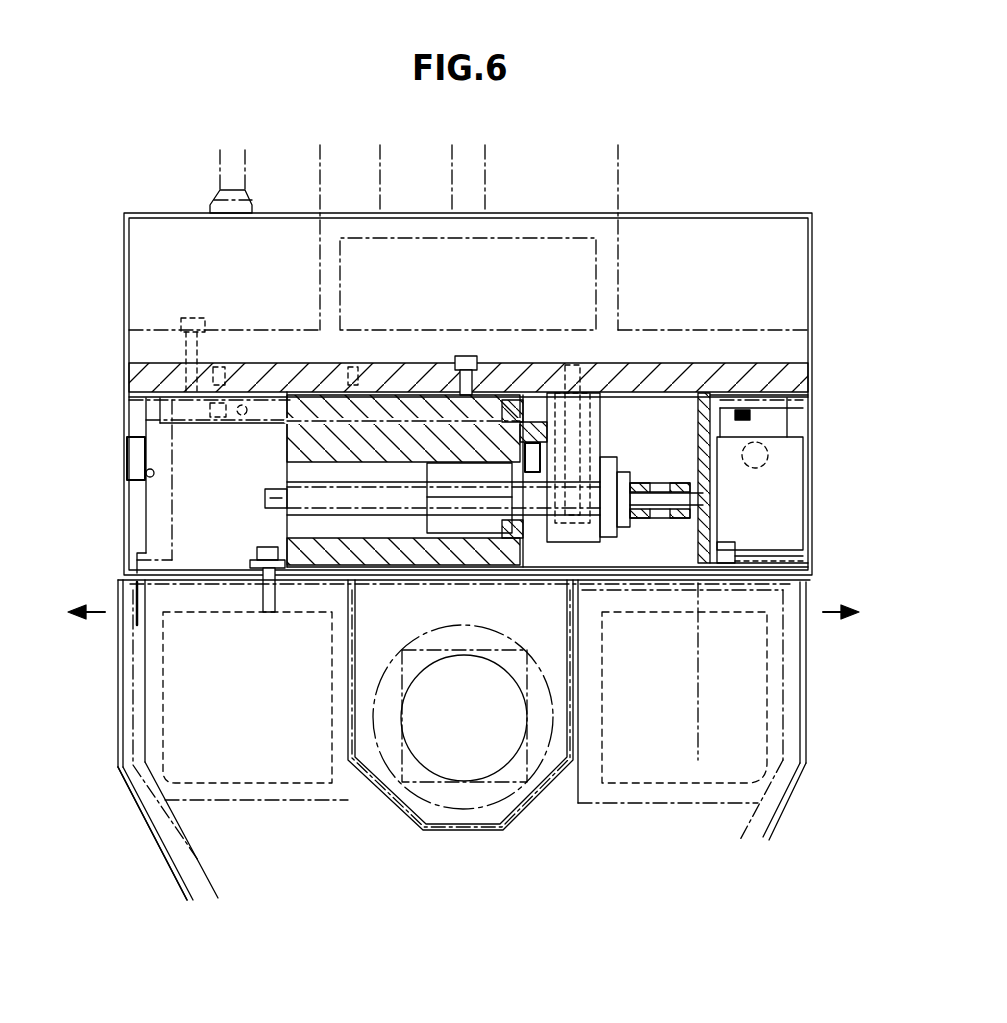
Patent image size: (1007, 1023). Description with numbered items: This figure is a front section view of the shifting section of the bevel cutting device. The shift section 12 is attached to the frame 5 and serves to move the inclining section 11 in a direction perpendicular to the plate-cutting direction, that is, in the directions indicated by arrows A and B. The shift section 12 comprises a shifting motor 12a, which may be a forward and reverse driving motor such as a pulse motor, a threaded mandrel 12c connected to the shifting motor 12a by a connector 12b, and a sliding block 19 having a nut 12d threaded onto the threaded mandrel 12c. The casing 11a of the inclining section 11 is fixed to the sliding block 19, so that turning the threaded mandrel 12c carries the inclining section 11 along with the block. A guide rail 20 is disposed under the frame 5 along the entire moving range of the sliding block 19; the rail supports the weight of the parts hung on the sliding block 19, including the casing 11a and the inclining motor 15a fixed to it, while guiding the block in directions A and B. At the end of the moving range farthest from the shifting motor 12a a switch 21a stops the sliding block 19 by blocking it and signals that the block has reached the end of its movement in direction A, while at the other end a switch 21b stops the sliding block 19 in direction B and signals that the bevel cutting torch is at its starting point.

The frame 5 is at (162, 238).
The guide rail 20 is at (263, 413).
The shift section 12 is at (116, 486).
The switch 21a is at (137, 460).
The switch 21b is at (537, 457).
The threaded mandrel 12c is at (333, 490).
The nut 12d is at (443, 515).
The connector 12b is at (676, 502).
The shifting motor 12a is at (750, 540).
The sliding block 19 is at (292, 548).
The inclining section 11 is at (112, 688).
The casing 11a is at (143, 787).
The inclining motor 15a is at (417, 722).